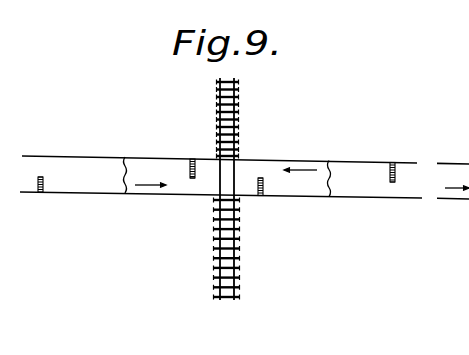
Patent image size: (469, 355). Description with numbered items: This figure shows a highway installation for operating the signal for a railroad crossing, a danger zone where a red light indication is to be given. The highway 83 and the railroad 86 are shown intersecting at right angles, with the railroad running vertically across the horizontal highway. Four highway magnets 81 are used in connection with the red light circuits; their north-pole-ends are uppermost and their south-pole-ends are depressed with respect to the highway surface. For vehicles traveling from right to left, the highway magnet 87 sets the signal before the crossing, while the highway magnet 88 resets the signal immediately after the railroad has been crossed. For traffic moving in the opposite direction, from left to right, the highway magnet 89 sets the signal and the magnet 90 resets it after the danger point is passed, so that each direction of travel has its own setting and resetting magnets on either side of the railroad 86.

The highway magnets 81 is at (41, 188).
The highway 83 is at (365, 187).
The railroad 86 is at (239, 131).
The highway magnet 87 is at (391, 163).
The highway magnet 88 is at (192, 161).
The highway magnet 89 is at (39, 177).
The highway magnet 90 is at (263, 183).